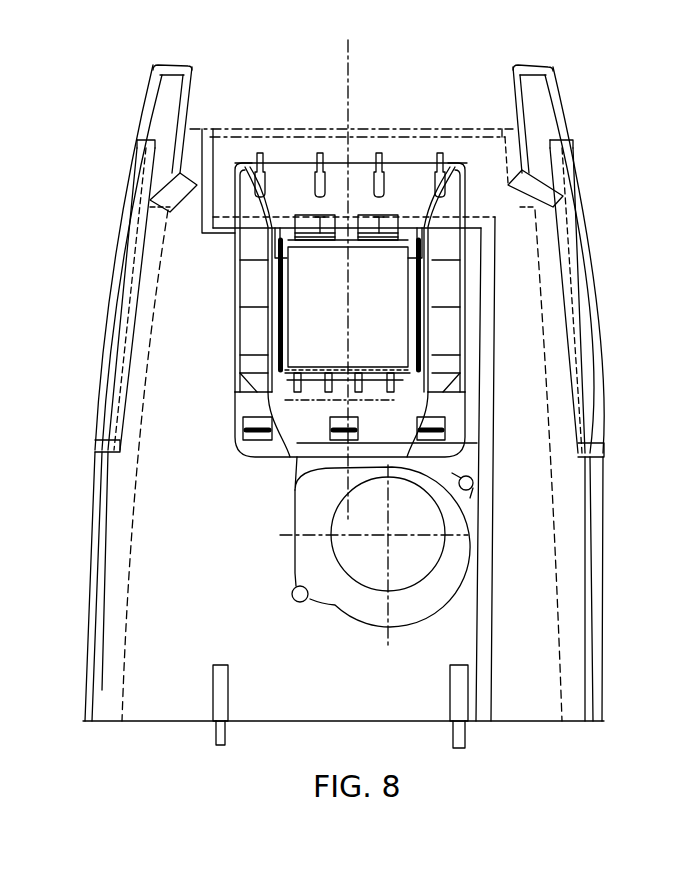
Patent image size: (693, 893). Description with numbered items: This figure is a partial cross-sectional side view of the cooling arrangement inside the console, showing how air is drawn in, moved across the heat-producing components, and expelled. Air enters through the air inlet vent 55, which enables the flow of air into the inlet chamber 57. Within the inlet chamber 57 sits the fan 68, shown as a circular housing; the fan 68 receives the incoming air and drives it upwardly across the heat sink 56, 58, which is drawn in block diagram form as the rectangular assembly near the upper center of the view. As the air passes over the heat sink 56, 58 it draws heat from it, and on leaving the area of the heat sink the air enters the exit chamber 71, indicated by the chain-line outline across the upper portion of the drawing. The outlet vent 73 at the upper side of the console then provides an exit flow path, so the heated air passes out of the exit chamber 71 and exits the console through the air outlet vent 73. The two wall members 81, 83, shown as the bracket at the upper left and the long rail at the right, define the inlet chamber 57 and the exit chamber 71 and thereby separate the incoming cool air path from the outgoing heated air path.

The air inlet vent 55 is at (127, 274).
The heat sink 56 is at (315, 322).
The heat sink 58 is at (239, 303).
The inlet chamber 57 is at (192, 612).
The fan 68 is at (350, 597).
The exit chamber 71 is at (418, 143).
The outlet vent 73 is at (578, 231).
The wall member 81 is at (208, 172).
The wall member 83 is at (487, 452).